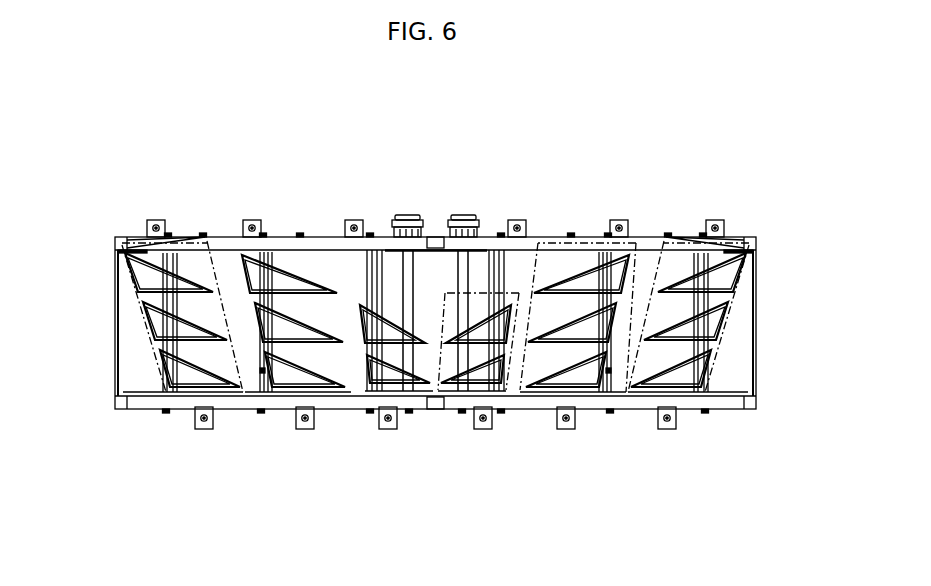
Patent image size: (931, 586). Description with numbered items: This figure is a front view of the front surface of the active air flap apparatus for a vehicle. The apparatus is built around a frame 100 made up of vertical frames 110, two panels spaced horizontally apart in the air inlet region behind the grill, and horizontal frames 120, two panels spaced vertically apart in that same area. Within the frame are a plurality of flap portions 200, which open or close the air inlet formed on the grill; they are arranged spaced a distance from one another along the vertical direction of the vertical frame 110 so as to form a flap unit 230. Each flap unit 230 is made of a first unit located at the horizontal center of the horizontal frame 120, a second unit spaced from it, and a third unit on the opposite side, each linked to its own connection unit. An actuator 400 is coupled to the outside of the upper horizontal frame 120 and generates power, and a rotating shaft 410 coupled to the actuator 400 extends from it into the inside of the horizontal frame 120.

The frame 100 is at (121, 233).
The vertical frames 110 is at (113, 367).
The horizontal frames 120 is at (221, 237).
The flap portion 200 is at (160, 363).
The flap unit 230 is at (373, 515).
The actuator 400 is at (465, 215).
The rotating shaft 410 is at (403, 273).